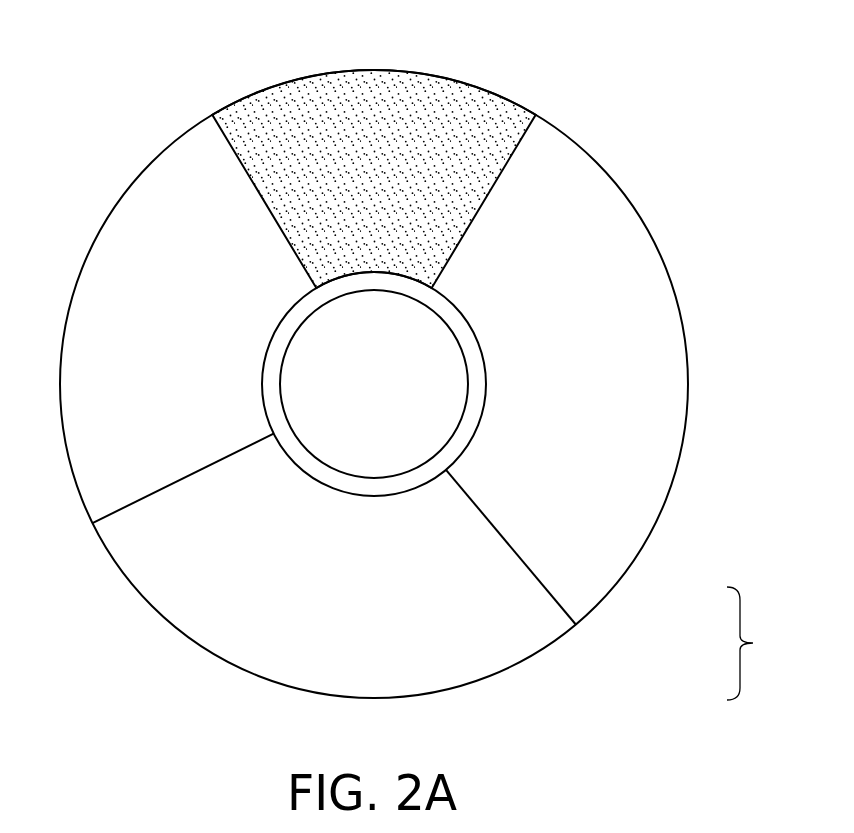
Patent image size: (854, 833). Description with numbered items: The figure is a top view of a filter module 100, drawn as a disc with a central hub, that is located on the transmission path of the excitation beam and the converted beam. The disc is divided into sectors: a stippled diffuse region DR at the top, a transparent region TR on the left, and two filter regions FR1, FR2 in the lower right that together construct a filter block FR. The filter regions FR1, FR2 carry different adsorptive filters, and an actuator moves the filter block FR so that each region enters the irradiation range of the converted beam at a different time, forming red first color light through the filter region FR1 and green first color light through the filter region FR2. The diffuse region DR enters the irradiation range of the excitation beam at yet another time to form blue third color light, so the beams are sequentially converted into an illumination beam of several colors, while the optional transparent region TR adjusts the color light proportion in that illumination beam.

The filter module 100 is at (101, 721).
The diffuse region DR is at (423, 95).
The transparent region TR is at (127, 250).
The filter region FR1 is at (593, 568).
The filter region FR2 is at (530, 642).
The filter block FR is at (757, 643).